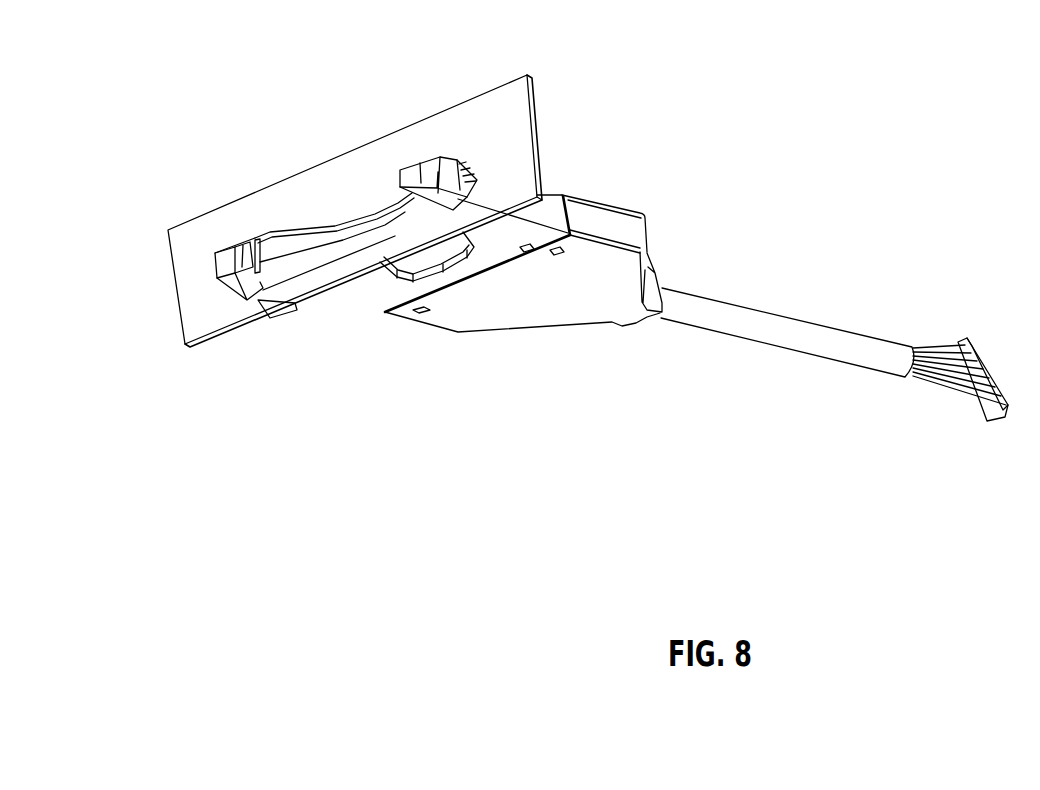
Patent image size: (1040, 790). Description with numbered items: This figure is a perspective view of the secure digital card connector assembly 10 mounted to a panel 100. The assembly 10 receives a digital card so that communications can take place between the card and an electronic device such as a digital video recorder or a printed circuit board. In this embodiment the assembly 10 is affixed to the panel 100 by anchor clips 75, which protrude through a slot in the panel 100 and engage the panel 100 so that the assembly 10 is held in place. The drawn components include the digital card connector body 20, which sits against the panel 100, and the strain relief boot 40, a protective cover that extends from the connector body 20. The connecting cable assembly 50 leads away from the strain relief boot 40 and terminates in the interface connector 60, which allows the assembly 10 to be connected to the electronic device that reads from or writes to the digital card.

The secure digital card connector assembly 10 is at (841, 179).
The digital card connector body 20 is at (380, 281).
The strain relief boot 40 is at (603, 293).
The connecting cable assembly 50 is at (770, 330).
The interface connector 60 is at (1000, 425).
The anchor clip 75 is at (480, 177).
The panel 100 is at (498, 105).